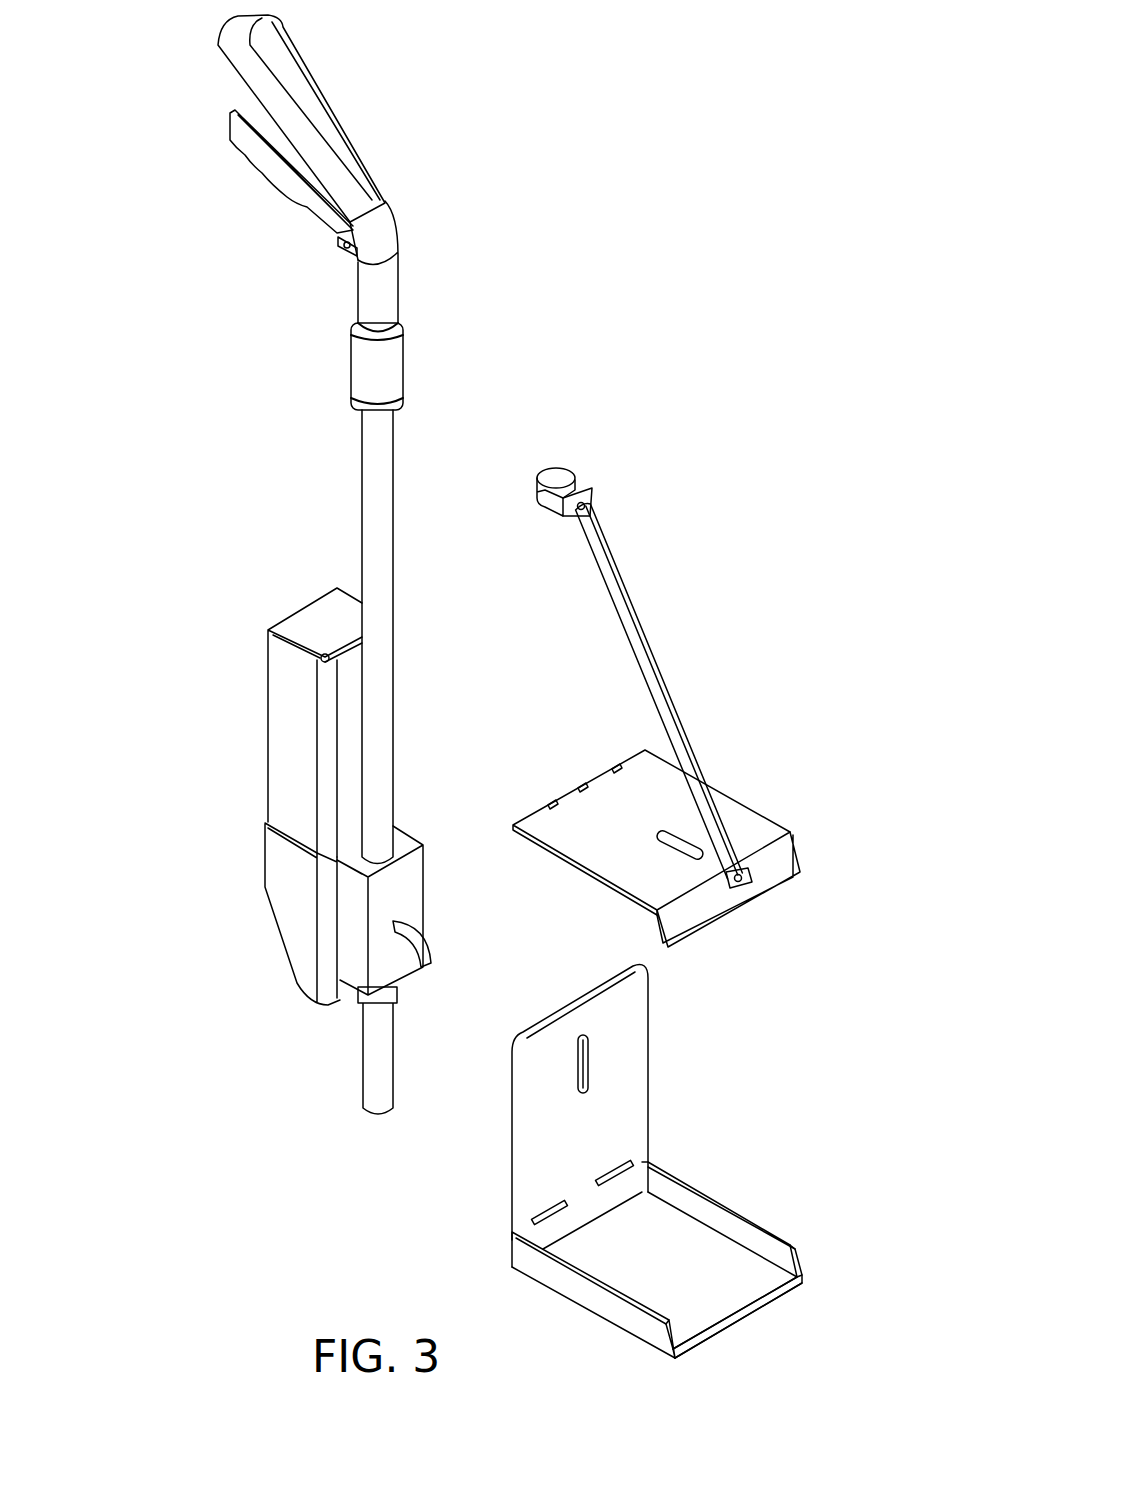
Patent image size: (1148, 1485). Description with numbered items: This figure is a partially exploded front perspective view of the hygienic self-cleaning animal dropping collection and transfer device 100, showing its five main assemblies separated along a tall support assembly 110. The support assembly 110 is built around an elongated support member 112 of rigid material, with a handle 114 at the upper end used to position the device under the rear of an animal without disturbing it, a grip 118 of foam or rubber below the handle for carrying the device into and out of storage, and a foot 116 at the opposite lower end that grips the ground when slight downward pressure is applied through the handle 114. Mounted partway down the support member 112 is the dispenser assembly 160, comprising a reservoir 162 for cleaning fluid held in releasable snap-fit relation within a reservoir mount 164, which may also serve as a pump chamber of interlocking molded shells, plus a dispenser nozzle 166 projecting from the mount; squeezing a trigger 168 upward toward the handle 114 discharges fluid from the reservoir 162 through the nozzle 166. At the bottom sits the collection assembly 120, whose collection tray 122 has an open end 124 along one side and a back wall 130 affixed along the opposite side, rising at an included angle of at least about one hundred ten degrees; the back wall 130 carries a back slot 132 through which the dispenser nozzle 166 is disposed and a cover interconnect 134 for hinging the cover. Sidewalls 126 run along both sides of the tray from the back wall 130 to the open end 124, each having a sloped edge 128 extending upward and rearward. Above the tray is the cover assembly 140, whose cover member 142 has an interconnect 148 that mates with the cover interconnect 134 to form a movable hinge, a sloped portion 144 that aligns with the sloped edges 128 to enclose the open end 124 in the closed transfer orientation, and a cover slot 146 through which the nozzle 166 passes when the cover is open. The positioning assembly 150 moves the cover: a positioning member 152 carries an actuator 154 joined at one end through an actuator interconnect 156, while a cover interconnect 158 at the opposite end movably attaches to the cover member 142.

The hygienic self-cleaning animal dropping collection and transfer device 100 is at (592, 198).
The support assembly 110 is at (442, 430).
The support member 112 is at (397, 605).
The handle 114 is at (342, 120).
The foot 116 is at (360, 1078).
The grip 118 is at (405, 347).
The collection assembly 120 is at (737, 1158).
The collection tray 122 is at (725, 1270).
The open end 124 is at (745, 1320).
The sidewall 126 is at (725, 1205).
The sloped edge 128 is at (795, 1240).
The back wall 130 is at (650, 1080).
The back slot 132 is at (575, 1085).
The cover interconnect 134 is at (612, 1170).
The cover assembly 140 is at (797, 813).
The cover member 142 is at (725, 795).
The sloped portion 144 is at (665, 930).
The cover slot 146 is at (687, 856).
The interconnect 148 is at (582, 783).
The positioning assembly 150 is at (692, 581).
The positioning member 152 is at (680, 705).
The actuator 154 is at (584, 470).
The actuator interconnect 156 is at (596, 502).
The cover interconnect 158 is at (752, 883).
The dispenser assembly 160 is at (223, 812).
The reservoir 162 is at (265, 700).
The reservoir mount 164 is at (403, 845).
The dispenser nozzle 166 is at (425, 942).
The trigger 168 is at (260, 173).